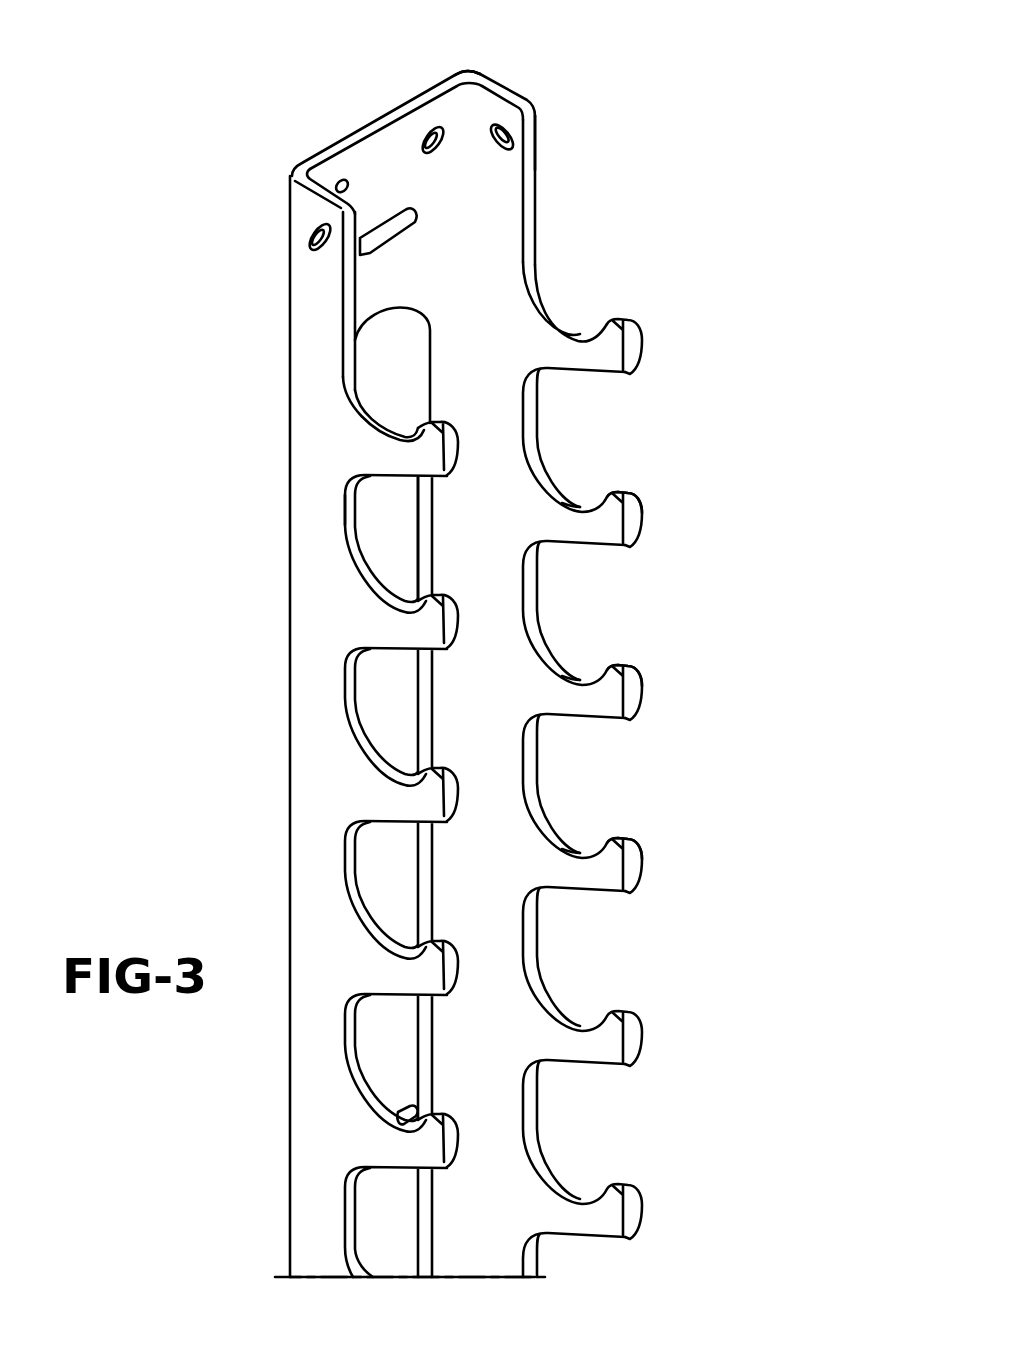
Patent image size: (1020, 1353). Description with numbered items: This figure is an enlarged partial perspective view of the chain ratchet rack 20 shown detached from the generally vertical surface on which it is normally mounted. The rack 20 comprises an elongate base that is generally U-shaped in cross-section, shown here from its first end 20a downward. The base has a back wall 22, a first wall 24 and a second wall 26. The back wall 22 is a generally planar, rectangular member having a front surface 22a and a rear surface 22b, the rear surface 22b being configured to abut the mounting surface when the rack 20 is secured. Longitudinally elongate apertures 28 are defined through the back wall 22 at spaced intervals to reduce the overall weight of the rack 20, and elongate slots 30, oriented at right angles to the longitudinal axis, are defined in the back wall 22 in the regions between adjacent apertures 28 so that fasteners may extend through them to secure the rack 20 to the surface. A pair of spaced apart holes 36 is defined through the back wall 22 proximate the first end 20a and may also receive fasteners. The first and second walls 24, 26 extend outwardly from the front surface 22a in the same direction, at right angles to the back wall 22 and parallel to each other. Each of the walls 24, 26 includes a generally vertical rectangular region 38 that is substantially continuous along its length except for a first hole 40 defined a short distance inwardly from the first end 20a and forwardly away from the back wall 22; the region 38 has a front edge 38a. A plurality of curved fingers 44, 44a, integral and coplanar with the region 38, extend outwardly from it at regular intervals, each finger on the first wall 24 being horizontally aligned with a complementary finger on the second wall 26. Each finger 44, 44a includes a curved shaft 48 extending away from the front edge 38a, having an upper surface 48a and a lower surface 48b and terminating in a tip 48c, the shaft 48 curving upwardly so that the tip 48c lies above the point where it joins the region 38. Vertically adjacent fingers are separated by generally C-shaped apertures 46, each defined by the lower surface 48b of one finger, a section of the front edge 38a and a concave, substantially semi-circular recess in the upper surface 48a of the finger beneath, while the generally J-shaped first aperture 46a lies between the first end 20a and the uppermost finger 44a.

The rack 20 is at (655, 176).
The first end 20a is at (526, 70).
The back wall 22 is at (355, 122).
The front surface 22a is at (387, 163).
The rear surface 22b is at (317, 158).
The first wall 24 is at (328, 592).
The second wall 26 is at (540, 250).
The aperture 28 is at (393, 325).
The slot 30 is at (370, 252).
The hole 36 is at (445, 128).
The rectangular region 38 is at (315, 324).
The front edge 38a is at (536, 126).
The first hole 40 is at (315, 245).
The finger 44 is at (397, 661).
The uppermost finger 44a is at (399, 481).
The aperture 46 is at (381, 588).
The first aperture 46a is at (379, 412).
The curved shaft 48 is at (590, 552).
The upper surface 48a is at (578, 508).
The lower surface 48b is at (585, 548).
The tip 48c is at (616, 497).